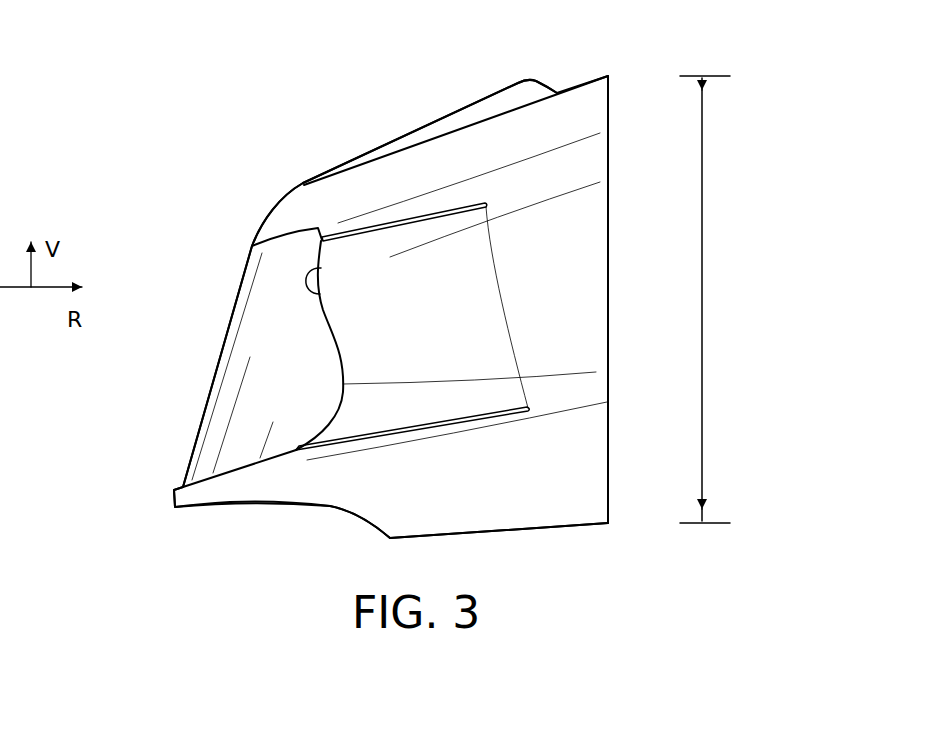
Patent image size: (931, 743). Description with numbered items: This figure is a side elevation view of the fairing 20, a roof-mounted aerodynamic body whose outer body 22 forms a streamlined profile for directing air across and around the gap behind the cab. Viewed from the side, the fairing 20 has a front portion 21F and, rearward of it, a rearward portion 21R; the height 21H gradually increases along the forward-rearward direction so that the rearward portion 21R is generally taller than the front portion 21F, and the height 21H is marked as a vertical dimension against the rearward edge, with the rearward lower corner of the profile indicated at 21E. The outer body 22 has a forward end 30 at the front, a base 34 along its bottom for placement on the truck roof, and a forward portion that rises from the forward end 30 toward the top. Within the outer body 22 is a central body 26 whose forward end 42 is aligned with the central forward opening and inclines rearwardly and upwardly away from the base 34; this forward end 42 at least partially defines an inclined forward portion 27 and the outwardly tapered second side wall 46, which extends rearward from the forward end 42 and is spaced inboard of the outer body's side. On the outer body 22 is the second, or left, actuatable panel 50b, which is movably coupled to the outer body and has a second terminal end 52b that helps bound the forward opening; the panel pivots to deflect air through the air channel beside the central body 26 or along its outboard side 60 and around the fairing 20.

The fairing 20 is at (131, 130).
The outer body 22 is at (426, 112).
The rearward portion 21R is at (584, 68).
The front portion 21F is at (246, 237).
The height 21H is at (708, 300).
The lower rear end edge 21E is at (615, 508).
The central body 26 is at (247, 300).
The inclined forward portion 27 is at (212, 376).
The forward end 42 is at (200, 416).
The second side wall 46 is at (295, 408).
The second actuatable panel 50b is at (432, 337).
The second terminal end 52b is at (322, 270).
The rear quarter panel region 60 is at (578, 288).
The forward end 30 is at (162, 496).
The base 34 is at (326, 534).